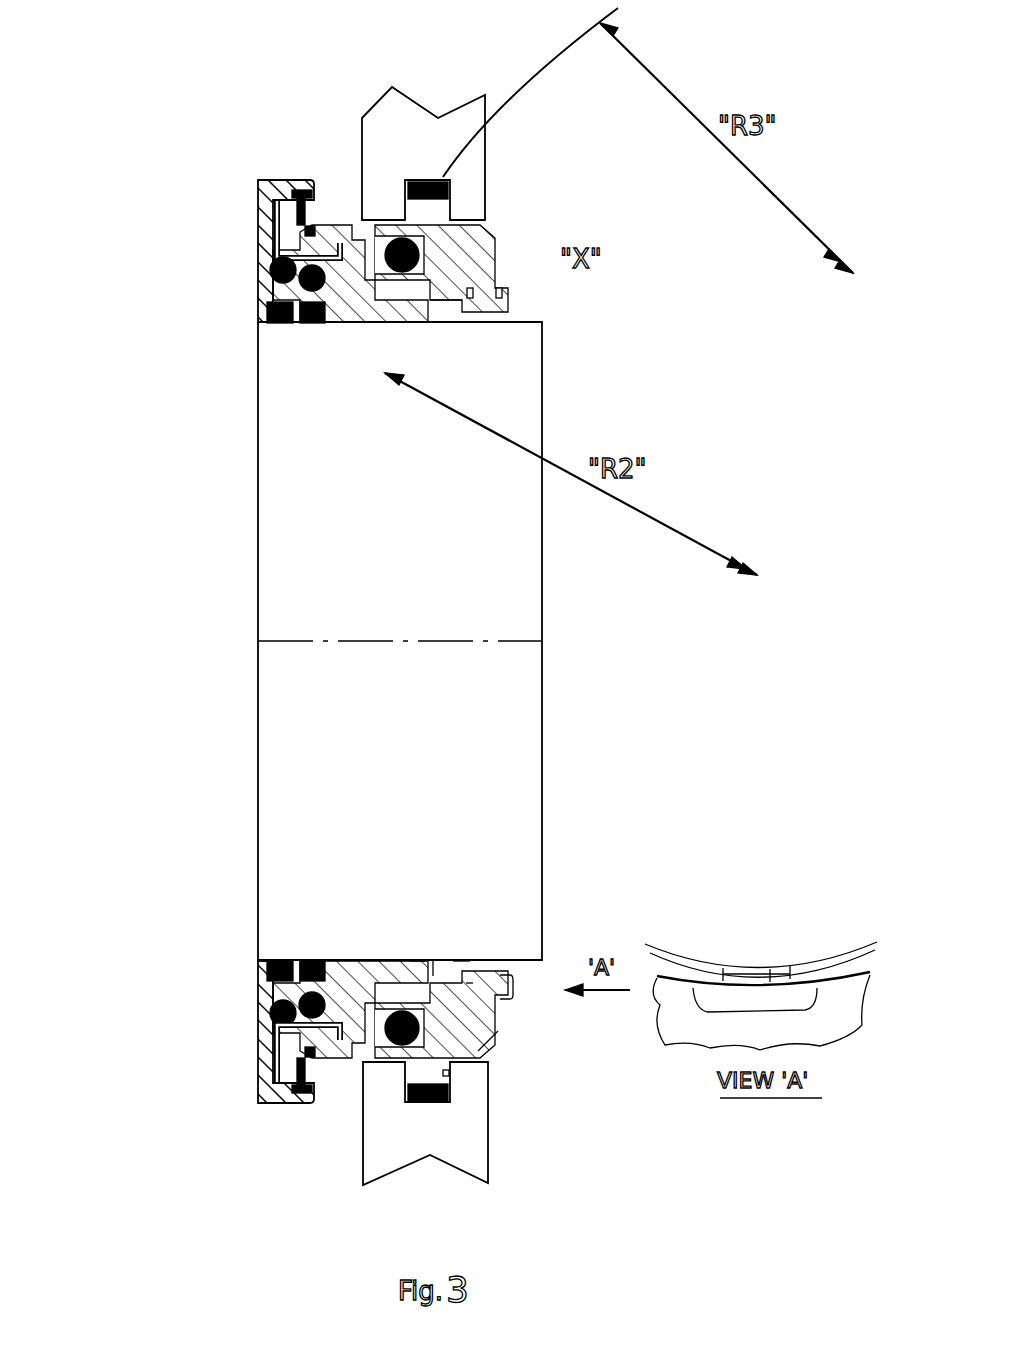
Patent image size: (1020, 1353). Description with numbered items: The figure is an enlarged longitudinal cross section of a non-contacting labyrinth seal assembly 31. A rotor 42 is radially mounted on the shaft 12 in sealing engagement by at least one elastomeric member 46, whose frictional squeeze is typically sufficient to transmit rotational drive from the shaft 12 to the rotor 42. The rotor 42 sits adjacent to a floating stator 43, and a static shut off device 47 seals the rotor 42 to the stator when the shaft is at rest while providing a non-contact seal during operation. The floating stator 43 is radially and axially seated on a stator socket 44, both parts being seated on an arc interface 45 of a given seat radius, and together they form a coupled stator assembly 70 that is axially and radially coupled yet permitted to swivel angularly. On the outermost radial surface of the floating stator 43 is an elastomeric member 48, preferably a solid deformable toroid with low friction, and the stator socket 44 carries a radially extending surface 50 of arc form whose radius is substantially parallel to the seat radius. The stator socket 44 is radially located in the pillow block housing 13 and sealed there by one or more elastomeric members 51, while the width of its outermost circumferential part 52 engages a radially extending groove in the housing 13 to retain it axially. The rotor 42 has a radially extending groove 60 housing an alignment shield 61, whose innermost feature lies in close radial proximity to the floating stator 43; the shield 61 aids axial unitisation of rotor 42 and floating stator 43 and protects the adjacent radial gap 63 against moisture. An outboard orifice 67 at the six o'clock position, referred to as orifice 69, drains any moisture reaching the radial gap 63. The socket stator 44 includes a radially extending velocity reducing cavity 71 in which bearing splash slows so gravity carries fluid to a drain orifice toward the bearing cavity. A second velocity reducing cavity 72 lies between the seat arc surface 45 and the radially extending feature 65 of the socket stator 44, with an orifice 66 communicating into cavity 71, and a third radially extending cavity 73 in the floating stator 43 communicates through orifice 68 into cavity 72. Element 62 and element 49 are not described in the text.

The non-contacting labyrinth seal assembly 31 is at (262, 147).
The rotor 42 is at (262, 185).
The radially extending groove 60 is at (298, 190).
The alignment shield 61 is at (314, 217).
The retaining clip 62 is at (318, 214).
The stator socket 44 is at (490, 250).
The static shut off device 47 is at (273, 278).
The elastomeric member 46 is at (277, 322).
The floating stator 43 is at (363, 323).
The radially extending feature 65 is at (437, 308).
The arc interface 45 is at (443, 298).
The shaft 12 is at (517, 877).
The second velocity reducing cavity 72 is at (440, 975).
The radially extending cavity 73 is at (400, 975).
The orifice 68 is at (418, 962).
The coupled stator assembly 70 is at (450, 975).
The velocity reducing cavity 71 is at (488, 968).
The orifice 66 is at (472, 962).
The orifice 69 is at (710, 1007).
The outboard orifice 67 is at (267, 1033).
The radial gap 63 is at (262, 1080).
The radially extending surface 50 is at (395, 1040).
The elastomeric member 48 is at (400, 1062).
The elastomeric member 51 is at (428, 1093).
The outer most circumferential part 52 is at (449, 1073).
The seal body 49 is at (473, 1027).
The pillow block housing 13 is at (477, 1135).